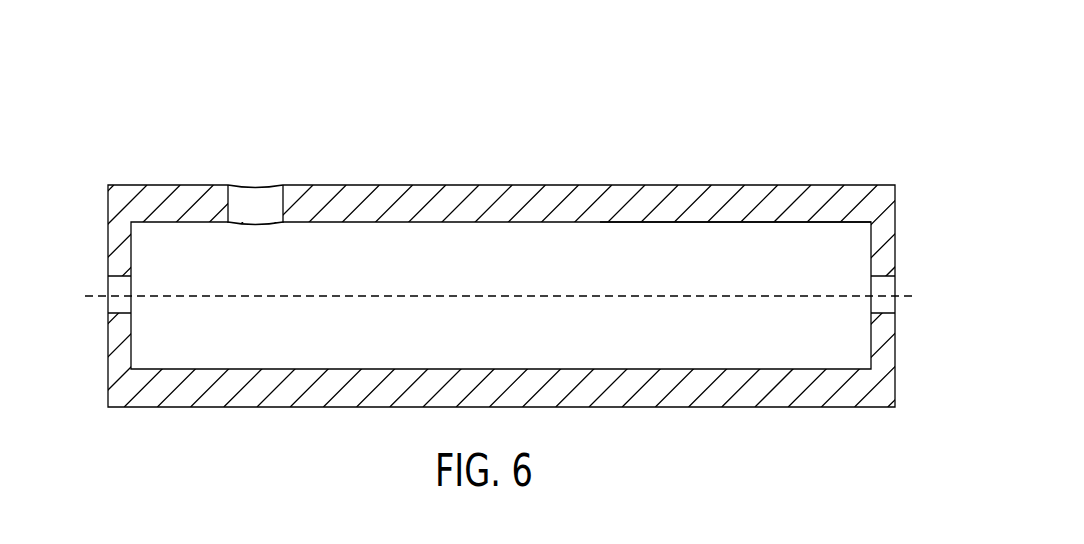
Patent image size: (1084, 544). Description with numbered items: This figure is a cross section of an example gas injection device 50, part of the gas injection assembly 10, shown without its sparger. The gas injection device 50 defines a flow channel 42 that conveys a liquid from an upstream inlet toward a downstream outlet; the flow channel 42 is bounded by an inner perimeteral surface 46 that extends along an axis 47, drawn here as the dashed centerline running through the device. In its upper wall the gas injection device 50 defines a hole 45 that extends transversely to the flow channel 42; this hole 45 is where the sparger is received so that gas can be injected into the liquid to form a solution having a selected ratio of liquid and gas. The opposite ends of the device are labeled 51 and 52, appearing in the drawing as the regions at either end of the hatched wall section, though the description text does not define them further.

The gas injection assembly 10 is at (542, 213).
The flow channel 42 is at (372, 268).
The hole 45 is at (257, 194).
The inner perimeteral surface 46 is at (694, 222).
The axis 47 is at (794, 296).
The gas injection device 50 is at (592, 159).
The first end 51 is at (156, 136).
The second end 52 is at (826, 169).